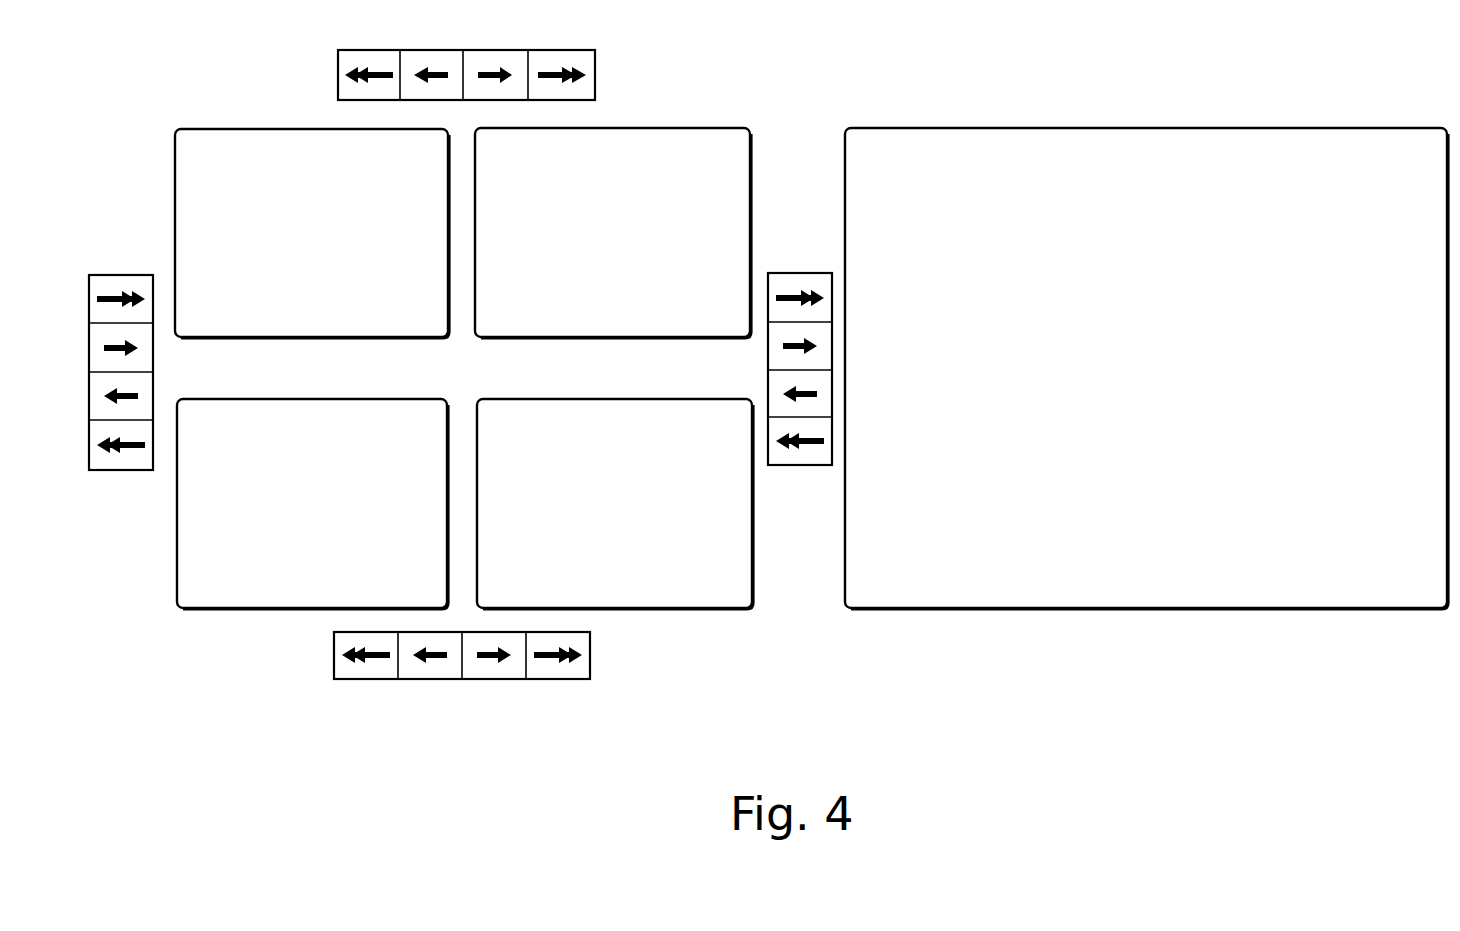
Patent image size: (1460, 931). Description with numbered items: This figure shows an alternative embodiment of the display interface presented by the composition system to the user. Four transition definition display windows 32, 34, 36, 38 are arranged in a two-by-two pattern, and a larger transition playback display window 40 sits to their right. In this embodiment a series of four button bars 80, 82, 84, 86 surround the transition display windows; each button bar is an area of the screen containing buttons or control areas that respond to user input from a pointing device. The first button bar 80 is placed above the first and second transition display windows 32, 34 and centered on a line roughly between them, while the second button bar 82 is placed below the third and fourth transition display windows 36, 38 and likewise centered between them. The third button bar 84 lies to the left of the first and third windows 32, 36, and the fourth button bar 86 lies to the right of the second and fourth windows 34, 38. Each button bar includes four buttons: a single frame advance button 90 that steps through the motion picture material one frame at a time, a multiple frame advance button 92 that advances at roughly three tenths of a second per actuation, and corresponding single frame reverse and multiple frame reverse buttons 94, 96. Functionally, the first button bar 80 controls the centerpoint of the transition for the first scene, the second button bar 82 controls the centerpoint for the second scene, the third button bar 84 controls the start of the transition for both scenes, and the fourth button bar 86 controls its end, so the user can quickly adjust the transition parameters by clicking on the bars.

The transition definition display window 32 is at (209, 129).
The transition definition display window 34 is at (680, 128).
The transition definition display window 36 is at (311, 399).
The transition definition display window 38 is at (619, 399).
The transition playback display window 40 is at (925, 128).
The first button bar 80 is at (414, 50).
The second button bar 82 is at (489, 678).
The third button bar 84 is at (125, 275).
The fourth button bar 86 is at (797, 273).
The single frame advance button 90 is at (472, 680).
The multiple frame advance button 92 is at (537, 680).
The single frame reverse button 94 is at (418, 680).
The multiple frame reverse button 96 is at (360, 680).